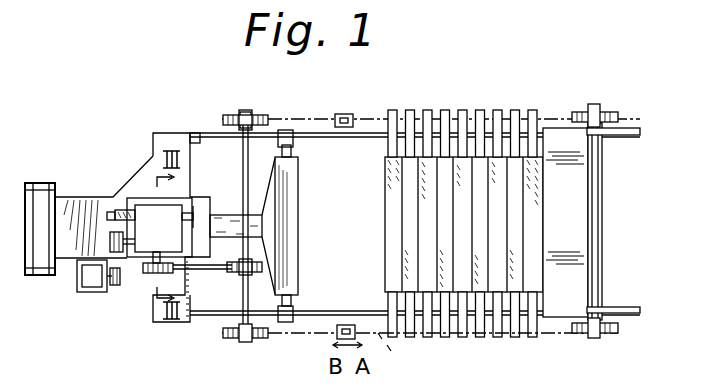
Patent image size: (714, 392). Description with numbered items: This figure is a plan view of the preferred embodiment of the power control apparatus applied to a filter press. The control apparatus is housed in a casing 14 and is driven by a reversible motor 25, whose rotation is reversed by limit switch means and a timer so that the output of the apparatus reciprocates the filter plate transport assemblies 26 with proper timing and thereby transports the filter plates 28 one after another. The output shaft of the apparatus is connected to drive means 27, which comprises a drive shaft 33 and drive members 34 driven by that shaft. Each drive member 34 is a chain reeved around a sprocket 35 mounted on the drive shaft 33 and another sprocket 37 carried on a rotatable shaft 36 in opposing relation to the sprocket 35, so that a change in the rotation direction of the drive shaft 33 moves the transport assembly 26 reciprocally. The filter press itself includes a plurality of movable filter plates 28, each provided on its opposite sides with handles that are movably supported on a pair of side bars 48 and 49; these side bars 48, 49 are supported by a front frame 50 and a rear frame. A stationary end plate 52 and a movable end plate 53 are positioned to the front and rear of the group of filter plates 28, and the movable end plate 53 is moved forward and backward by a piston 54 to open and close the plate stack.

The casing 14 is at (147, 203).
The reversible motor 25 is at (88, 285).
The filter plate transport assembly 26 is at (344, 113).
The drive means 27 is at (276, 346).
The filter plate 28 is at (407, 244).
The drive shaft 33 is at (243, 293).
The drive member 34 is at (498, 356).
The sprocket 35 is at (234, 339).
The rotatable shaft 36 is at (603, 250).
The sprocket 37 is at (607, 334).
The side bar 48 is at (330, 140).
The side bar 49 is at (329, 311).
The front frame 50 is at (118, 254).
The stationary end plate 52 is at (584, 191).
The movable end plate 53 is at (296, 217).
The piston 54 is at (226, 215).